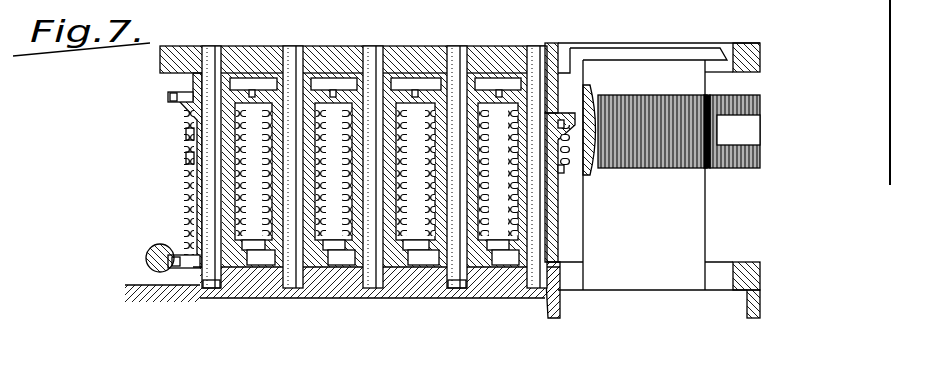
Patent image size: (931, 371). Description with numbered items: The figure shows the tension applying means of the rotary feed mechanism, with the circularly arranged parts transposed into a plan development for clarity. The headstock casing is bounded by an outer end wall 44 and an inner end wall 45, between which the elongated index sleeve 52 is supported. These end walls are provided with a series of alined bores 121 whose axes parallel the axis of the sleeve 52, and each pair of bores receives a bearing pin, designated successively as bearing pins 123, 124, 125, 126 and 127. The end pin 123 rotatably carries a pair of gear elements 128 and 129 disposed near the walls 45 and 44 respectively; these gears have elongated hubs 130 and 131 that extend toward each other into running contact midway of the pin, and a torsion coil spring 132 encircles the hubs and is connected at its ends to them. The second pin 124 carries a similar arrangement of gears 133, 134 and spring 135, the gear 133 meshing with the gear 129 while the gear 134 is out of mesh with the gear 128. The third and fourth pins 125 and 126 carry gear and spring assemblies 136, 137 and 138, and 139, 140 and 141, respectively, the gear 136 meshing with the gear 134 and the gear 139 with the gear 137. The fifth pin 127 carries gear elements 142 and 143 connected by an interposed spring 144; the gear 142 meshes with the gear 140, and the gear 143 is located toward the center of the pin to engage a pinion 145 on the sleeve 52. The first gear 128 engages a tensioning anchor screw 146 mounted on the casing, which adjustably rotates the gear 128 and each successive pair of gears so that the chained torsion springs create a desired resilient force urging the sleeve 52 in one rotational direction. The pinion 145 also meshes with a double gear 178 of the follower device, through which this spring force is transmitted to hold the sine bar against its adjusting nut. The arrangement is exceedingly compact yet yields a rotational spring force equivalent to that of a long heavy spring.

The outer end wall 44 is at (327, 62).
The inner end wall 45 is at (328, 280).
The index sleeve 52 is at (695, 220).
The alined bores 121 is at (228, 58).
The bearing pin 123 is at (210, 284).
The bearing pin 124 is at (292, 286).
The bearing pin 125 is at (371, 284).
The bearing pin 126 is at (447, 284).
The bearing pin 127 is at (533, 284).
The gear element 128 is at (185, 267).
The gear element 129 is at (180, 100).
The elongated hub 130 is at (188, 210).
The elongated hub 131 is at (186, 135).
The torsion coil spring 132 is at (186, 160).
The gear 133 is at (265, 77).
The gear 134 is at (254, 264).
The spring 135 is at (250, 170).
The gear 136 is at (343, 250).
The gear 137 is at (343, 78).
The spring 138 is at (347, 170).
The gear 139 is at (425, 75).
The gear 140 is at (422, 266).
The spring 141 is at (424, 182).
The gear element 142 is at (506, 266).
The gear element 143 is at (507, 111).
The spring 144 is at (508, 182).
The pinion 145 is at (637, 158).
The tensioning anchor screw 146 is at (147, 255).
The double gear 178 is at (733, 163).